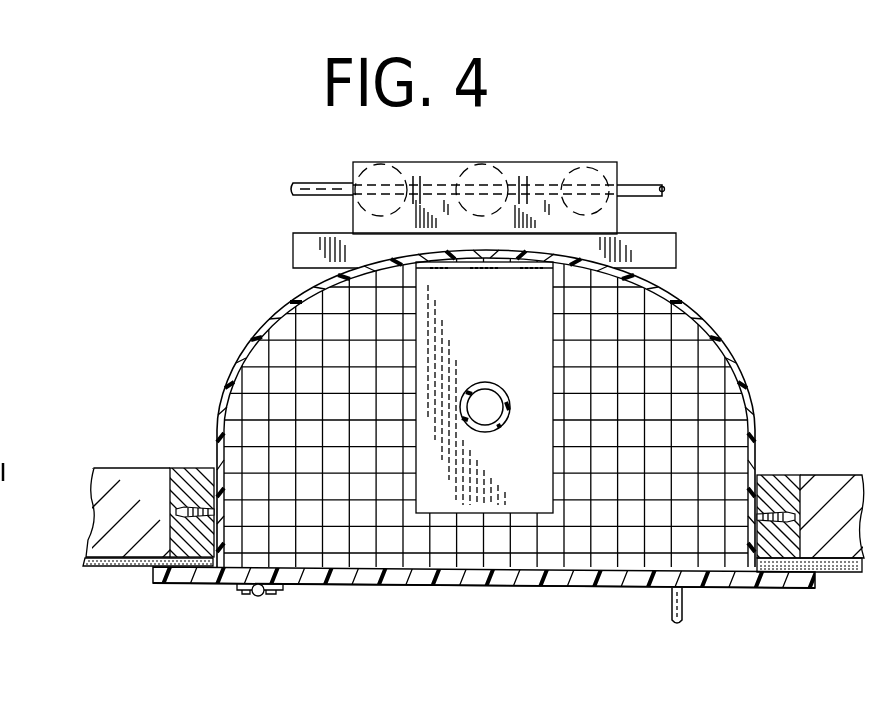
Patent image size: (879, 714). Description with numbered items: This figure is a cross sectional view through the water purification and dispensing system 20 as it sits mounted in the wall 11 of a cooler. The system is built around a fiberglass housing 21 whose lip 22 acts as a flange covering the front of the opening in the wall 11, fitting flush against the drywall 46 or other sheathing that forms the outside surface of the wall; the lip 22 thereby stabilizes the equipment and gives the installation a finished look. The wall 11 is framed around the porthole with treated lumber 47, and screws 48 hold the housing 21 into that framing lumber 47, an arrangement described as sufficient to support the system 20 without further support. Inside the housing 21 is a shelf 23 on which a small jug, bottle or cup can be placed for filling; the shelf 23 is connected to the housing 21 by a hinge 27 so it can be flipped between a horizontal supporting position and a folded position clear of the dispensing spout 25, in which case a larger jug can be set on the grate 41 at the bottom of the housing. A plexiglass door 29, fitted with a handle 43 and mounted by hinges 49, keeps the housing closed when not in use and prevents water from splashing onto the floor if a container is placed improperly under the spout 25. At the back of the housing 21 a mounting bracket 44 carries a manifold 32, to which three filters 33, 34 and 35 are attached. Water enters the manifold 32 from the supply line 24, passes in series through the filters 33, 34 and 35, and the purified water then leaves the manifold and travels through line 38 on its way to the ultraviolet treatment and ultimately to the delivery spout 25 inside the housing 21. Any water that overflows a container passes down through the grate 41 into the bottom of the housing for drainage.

The wall 11 is at (108, 516).
The water purification and dispensing system 20 is at (232, 197).
The fiberglass housing 21 is at (222, 373).
The lip 22 is at (738, 588).
The shelf 23 is at (436, 497).
The supply line 24 is at (300, 183).
The dispensing spout 25 is at (500, 384).
The hinge 27 is at (442, 262).
The plexiglass door 29 is at (573, 589).
The manifold 32 is at (540, 170).
The filter 33 is at (380, 172).
The filter 34 is at (478, 172).
The filter 35 is at (578, 175).
The line 38 is at (665, 187).
The grate 41 is at (365, 538).
The handle 43 is at (668, 603).
The mounting bracket 44 is at (300, 247).
The drywall 46 is at (122, 567).
The treated lumber 47 is at (186, 540).
The screws 48 is at (192, 508).
The hinges 49 is at (266, 594).